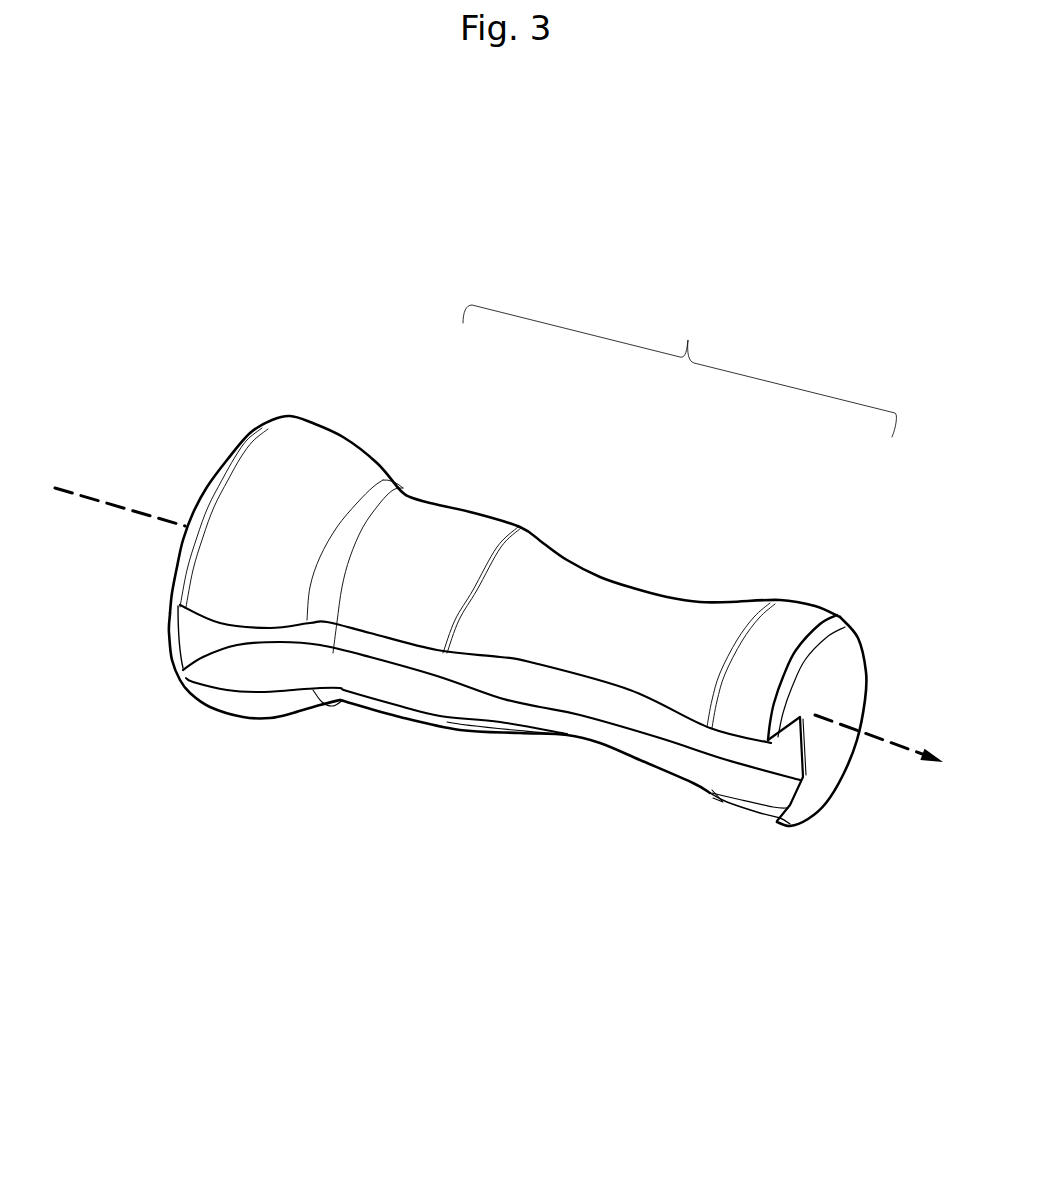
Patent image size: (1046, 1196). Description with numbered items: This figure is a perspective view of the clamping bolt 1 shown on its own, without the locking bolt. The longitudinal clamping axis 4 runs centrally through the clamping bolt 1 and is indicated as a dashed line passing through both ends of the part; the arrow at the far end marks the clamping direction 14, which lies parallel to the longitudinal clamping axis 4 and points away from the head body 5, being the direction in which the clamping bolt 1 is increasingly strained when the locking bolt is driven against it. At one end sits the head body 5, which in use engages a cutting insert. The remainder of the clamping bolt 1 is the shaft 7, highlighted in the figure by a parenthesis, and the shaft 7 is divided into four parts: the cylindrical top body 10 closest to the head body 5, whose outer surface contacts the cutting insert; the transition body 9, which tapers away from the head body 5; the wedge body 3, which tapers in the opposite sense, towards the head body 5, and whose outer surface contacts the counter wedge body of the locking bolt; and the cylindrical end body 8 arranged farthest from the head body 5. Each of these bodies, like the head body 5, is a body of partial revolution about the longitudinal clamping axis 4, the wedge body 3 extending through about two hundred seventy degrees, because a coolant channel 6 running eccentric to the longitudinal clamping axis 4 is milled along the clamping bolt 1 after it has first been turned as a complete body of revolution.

The clamping bolt 1 is at (382, 823).
The wedge body 3 is at (686, 612).
The longitudinal clamping axis 4 is at (103, 502).
The head body 5 is at (280, 478).
The coolant channel 6 is at (575, 697).
The shaft 7 is at (702, 306).
The cylindrical end body 8 is at (790, 623).
The transition body 9 is at (537, 560).
The cylindrical top body 10 is at (410, 540).
The clamping direction 14 is at (879, 775).